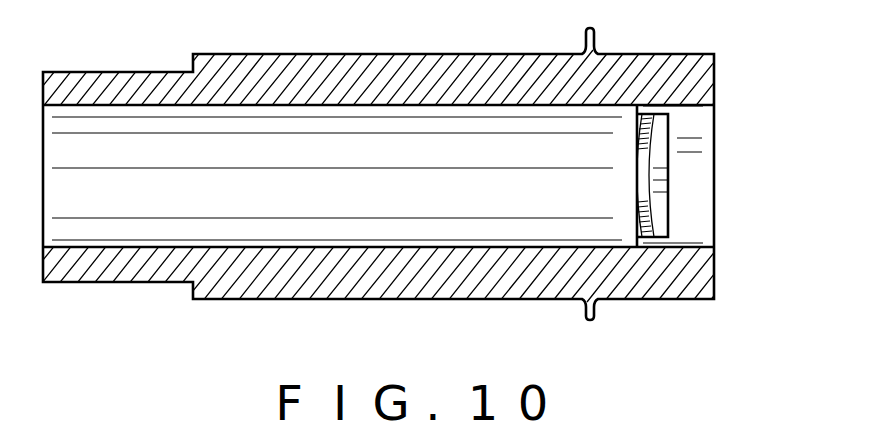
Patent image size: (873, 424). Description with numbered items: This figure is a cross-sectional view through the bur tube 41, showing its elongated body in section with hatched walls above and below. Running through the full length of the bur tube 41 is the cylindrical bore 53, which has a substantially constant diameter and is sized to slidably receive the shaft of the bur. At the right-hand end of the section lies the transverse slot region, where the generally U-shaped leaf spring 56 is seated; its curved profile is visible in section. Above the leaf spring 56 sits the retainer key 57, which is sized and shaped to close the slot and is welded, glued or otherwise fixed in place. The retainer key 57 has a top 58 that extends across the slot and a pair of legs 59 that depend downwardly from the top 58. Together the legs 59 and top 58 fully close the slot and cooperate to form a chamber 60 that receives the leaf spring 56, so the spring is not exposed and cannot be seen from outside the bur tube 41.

The bur tube 41 is at (700, 308).
The bore 53 is at (427, 209).
The leaf spring 56 is at (657, 126).
The retainer key 57 is at (705, 204).
The top 58 is at (692, 223).
The legs 59 is at (637, 128).
The chamber 60 is at (660, 152).